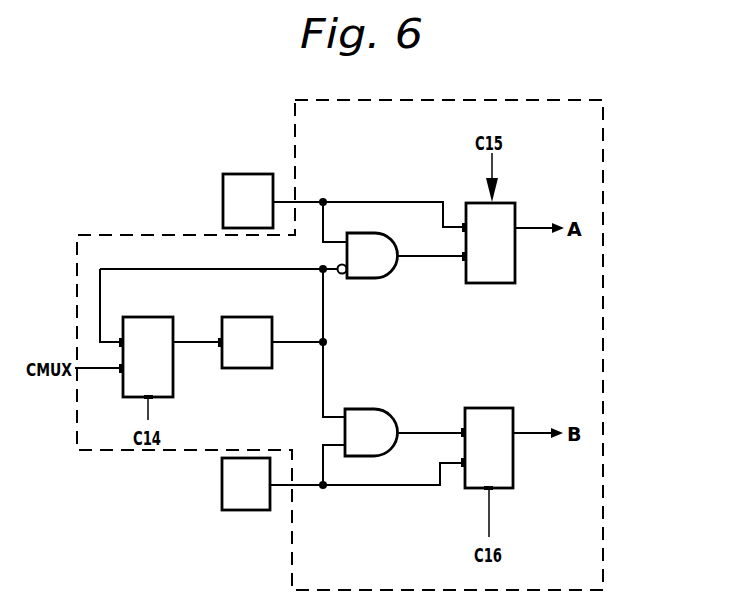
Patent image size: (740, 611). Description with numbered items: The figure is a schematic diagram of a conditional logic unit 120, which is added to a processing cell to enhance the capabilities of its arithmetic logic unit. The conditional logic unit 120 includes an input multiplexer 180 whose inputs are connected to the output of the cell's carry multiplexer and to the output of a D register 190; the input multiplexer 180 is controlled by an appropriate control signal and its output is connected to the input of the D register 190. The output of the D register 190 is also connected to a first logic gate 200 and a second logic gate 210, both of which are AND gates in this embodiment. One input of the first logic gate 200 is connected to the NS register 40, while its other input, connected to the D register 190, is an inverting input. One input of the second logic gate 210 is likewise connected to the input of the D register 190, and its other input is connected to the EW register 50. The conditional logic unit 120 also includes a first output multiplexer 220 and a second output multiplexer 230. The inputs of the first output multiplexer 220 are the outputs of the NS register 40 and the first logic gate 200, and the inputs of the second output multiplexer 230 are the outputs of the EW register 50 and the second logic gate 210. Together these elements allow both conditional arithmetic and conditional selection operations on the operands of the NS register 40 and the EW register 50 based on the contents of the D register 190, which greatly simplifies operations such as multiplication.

The north-south (NS) register 40 is at (248, 178).
The east-west (EW) register 50 is at (247, 508).
The conditional logic unit 120 is at (604, 175).
The input multiplexer 180 is at (148, 320).
The D register 190 is at (247, 320).
The first logic gate 200 is at (366, 279).
The second logic gate 210 is at (367, 413).
The first output multiplexer 220 is at (490, 284).
The second output multiplexer 230 is at (489, 407).